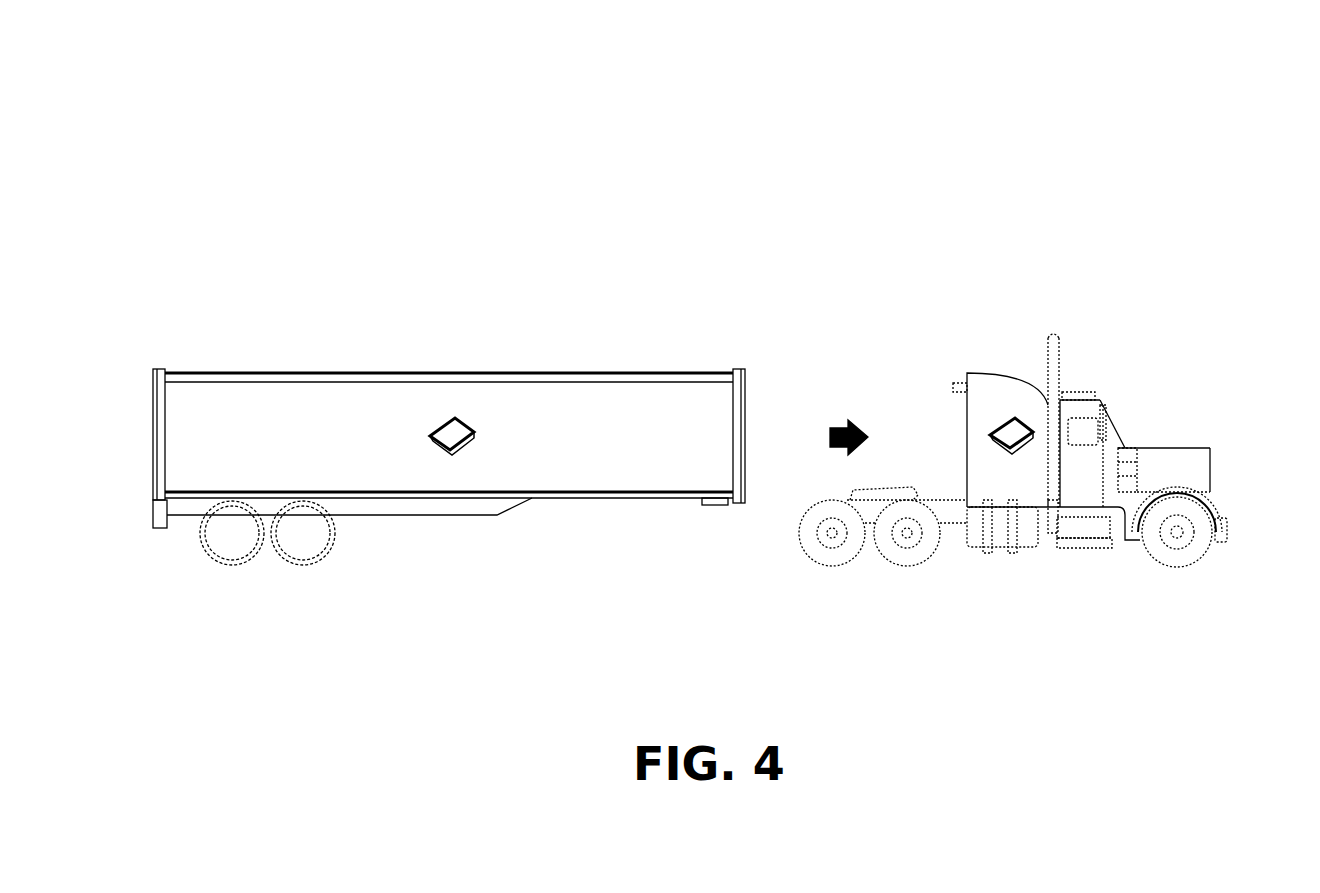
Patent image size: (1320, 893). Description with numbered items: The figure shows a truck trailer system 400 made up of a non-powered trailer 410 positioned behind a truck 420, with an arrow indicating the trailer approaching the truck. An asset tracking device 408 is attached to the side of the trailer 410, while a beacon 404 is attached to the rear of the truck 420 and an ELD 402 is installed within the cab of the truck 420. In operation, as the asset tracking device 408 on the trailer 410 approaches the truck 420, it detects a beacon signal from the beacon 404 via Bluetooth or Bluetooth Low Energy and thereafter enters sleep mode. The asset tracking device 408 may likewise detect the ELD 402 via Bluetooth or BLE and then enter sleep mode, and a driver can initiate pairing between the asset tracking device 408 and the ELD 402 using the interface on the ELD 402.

The truck trailer system 400 is at (273, 170).
The ELD 402 is at (1012, 415).
The beacon 404 is at (948, 383).
The asset tracking device 408 is at (437, 420).
The trailer 410 is at (698, 373).
The truck 420 is at (1200, 447).